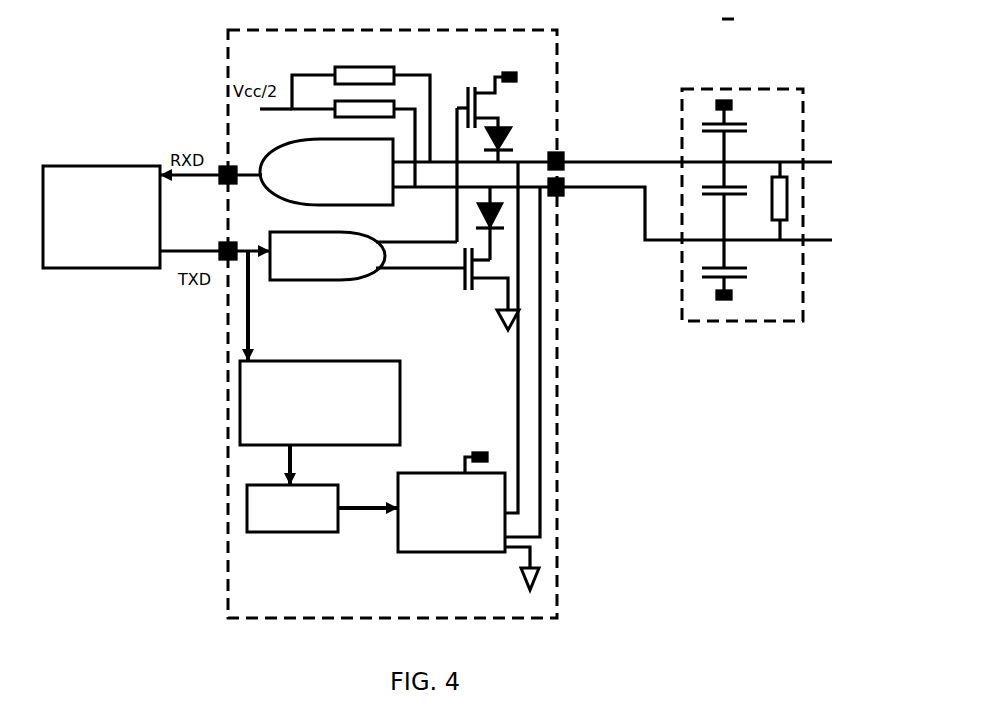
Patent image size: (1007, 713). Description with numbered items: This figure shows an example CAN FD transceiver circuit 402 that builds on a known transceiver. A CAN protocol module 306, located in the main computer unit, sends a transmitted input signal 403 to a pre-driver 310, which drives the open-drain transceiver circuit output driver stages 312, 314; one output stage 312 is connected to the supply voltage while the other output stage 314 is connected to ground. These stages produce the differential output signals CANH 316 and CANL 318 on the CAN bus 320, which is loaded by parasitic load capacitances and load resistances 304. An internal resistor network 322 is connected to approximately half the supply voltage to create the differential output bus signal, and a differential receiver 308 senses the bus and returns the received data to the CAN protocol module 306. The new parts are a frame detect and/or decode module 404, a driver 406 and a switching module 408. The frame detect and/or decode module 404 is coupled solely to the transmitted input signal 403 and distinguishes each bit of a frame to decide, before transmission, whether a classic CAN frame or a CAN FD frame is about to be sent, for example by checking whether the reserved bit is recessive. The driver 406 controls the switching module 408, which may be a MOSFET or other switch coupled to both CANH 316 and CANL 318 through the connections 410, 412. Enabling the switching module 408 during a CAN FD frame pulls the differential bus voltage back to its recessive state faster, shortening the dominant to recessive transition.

The parasitic load capacitances and load resistances 304 is at (741, 89).
The CAN protocol module 306 is at (103, 166).
The differential receiver 308 is at (263, 160).
The pre-driver 310 is at (297, 282).
The transceiver circuit output driver stage 312 is at (478, 87).
The transceiver circuit output driver stage 314 is at (462, 287).
The CANH 316 is at (598, 128).
The CANL 318 is at (612, 222).
The CAN bus 320 is at (681, 162).
The internal resistor network 322 is at (382, 62).
The transceiver circuit 402 is at (228, 58).
The transmitted input signal 403 is at (248, 334).
The frame detect and/or decode module 404 is at (240, 408).
The driver 406 is at (247, 507).
The switching module 408 is at (398, 548).
The CANH switching connection 410 is at (518, 412).
The CANL switching connection 412 is at (540, 383).